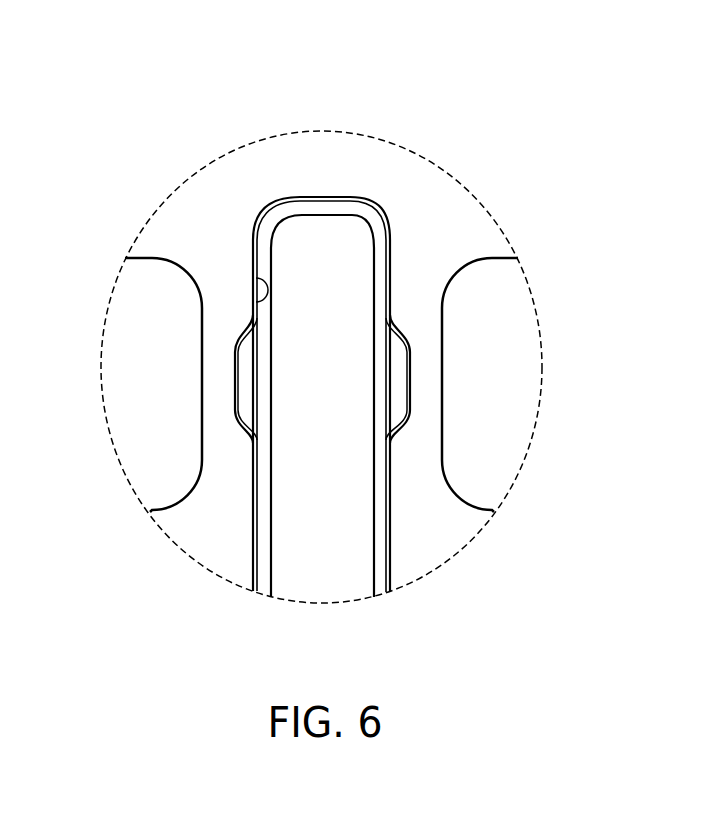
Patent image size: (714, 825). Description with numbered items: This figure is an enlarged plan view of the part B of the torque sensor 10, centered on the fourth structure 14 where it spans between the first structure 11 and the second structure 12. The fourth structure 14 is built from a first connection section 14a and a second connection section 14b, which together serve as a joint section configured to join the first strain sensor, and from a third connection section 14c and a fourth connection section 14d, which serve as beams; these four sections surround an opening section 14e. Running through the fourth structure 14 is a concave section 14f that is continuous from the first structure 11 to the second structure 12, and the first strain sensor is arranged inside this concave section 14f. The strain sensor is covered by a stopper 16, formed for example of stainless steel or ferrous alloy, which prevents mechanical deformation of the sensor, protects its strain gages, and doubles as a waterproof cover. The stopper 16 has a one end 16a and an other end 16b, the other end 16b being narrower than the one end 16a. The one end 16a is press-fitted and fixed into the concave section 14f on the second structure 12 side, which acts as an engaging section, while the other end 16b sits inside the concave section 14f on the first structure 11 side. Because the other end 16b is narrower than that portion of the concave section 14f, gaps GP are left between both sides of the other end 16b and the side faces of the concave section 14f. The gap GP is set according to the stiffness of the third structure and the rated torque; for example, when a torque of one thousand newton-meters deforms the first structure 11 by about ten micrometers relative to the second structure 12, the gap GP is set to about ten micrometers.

The torque sensor 10 is at (326, 78).
The first structure 11 is at (157, 238).
The second structure 12 is at (200, 540).
The fourth structure 14 is at (322, 191).
The first connection section 14a is at (411, 289).
The second connection section 14b is at (428, 482).
The third connection section 14c is at (218, 378).
The fourth connection section 14d is at (425, 382).
The opening section 14e is at (247, 400).
The concave section 14f is at (255, 303).
The stopper 16 is at (293, 377).
The one end 16a is at (308, 560).
The other end 16b is at (293, 263).
The gap GP is at (222, 115).
The part B is at (201, 166).